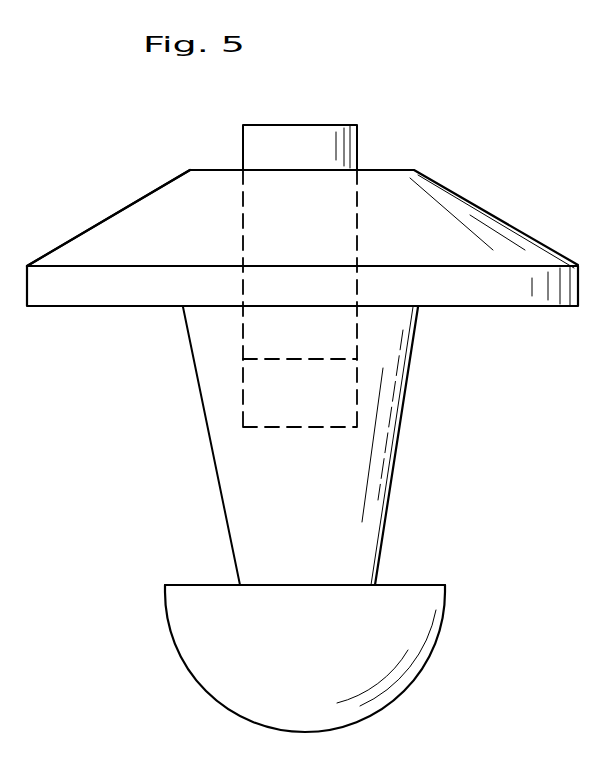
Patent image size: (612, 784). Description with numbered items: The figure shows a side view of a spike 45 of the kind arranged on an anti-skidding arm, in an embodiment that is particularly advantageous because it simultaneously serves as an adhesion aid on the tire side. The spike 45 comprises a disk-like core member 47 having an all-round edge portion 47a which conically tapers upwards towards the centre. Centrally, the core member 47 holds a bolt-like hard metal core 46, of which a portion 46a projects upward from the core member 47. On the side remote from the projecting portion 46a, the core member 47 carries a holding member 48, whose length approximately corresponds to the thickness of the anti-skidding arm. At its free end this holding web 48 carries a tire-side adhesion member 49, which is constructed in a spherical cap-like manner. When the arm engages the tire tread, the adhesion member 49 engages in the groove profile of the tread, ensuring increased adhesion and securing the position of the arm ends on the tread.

The spike 45 is at (222, 160).
The projecting portion of hard metal core 46a is at (320, 135).
The hard metal core 46 is at (340, 213).
The core member 47 is at (478, 225).
The edge portion 47a is at (84, 232).
The holding member 48 is at (380, 478).
The adhesion member 49 is at (418, 641).